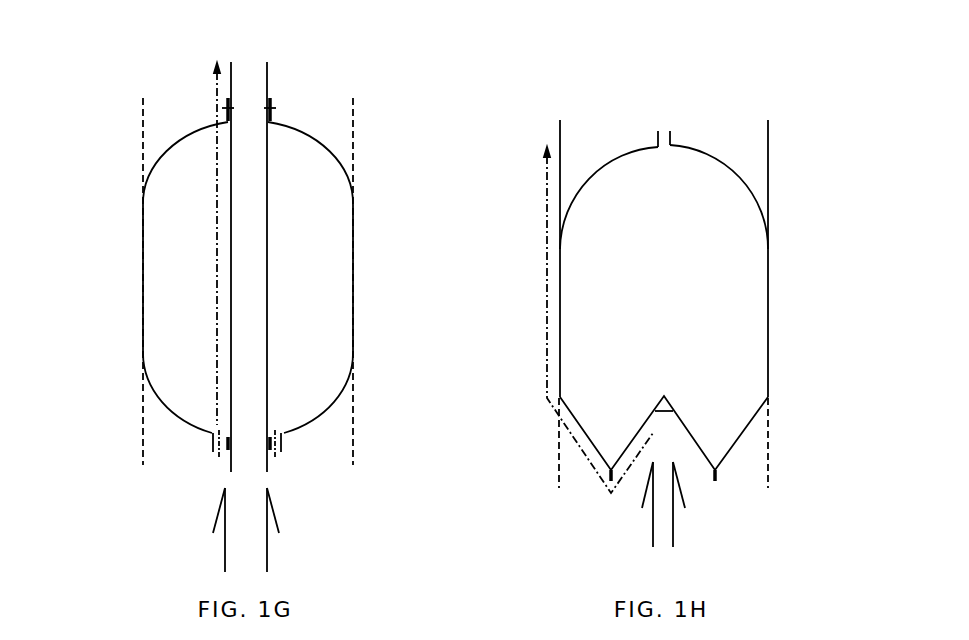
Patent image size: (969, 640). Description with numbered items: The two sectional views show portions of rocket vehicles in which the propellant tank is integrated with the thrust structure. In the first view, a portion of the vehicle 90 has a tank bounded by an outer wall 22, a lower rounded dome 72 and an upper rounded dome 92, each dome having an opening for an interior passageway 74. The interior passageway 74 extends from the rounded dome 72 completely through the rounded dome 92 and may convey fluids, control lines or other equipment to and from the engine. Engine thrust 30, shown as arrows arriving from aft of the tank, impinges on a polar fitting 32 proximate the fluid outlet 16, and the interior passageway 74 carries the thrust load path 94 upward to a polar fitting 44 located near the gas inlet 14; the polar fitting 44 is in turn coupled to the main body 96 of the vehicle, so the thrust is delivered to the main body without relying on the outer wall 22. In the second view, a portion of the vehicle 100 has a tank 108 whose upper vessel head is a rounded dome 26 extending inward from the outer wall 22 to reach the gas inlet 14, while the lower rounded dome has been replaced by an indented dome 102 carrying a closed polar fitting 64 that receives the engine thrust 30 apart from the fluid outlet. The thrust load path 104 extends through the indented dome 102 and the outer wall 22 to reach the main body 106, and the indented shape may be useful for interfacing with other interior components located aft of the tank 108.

In FIG. 1G, the vehicle 90 is at (103, 73).
In FIG. 1G, the rounded dome 92 is at (180, 142).
In FIG. 1G, the thrust load path 94 is at (216, 232).
In FIG. 1G, the main body 96 is at (353, 118).
In FIG. 1G, the outer wall 22 is at (353, 278).
In FIG. 1H, the outer wall 22 is at (769, 345).
In FIG. 1G, the polar fitting 44 is at (267, 72).
In FIG. 1G, the interior passageway 74 is at (267, 322).
In FIG. 1G, the gas inlet 14 is at (279, 430).
In FIG. 1H, the gas inlet 14 is at (668, 125).
In FIG. 1G, the fluid outlet 16 is at (214, 455).
In FIG. 1G, the rounded dome 72 is at (316, 413).
In FIG. 1G, the polar fitting 32 is at (267, 467).
In FIG. 1G, the engine thrust 30 is at (267, 556).
In FIG. 1H, the engine thrust 30 is at (653, 532).
In FIG. 1H, the vehicle 100 is at (800, 99).
In FIG. 1H, the rounded dome 26 is at (718, 157).
In FIG. 1H, the main body 106 is at (769, 145).
In FIG. 1H, the tank 108 is at (745, 255).
In FIG. 1H, the closed polar fitting 64 is at (655, 408).
In FIG. 1H, the indented dome 102 is at (737, 440).
In FIG. 1H, the thrust load path 104 is at (547, 262).